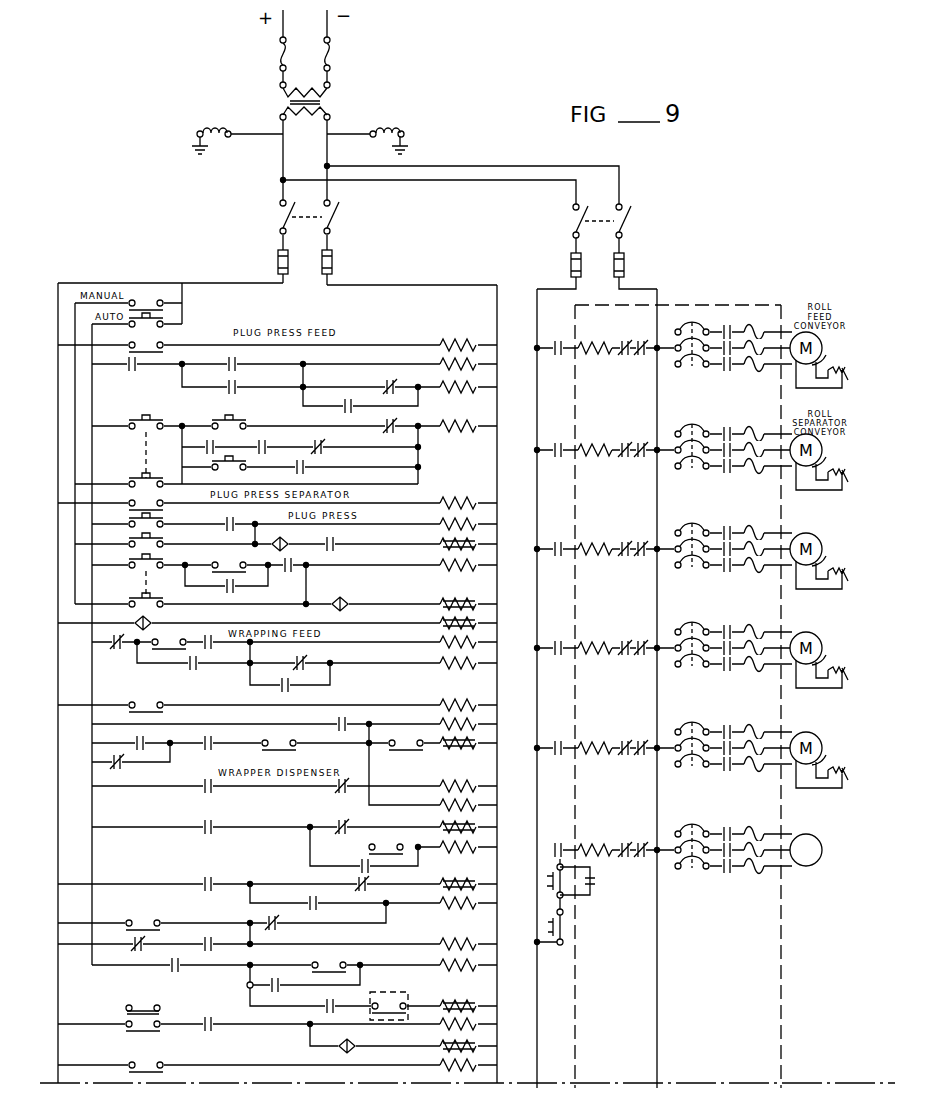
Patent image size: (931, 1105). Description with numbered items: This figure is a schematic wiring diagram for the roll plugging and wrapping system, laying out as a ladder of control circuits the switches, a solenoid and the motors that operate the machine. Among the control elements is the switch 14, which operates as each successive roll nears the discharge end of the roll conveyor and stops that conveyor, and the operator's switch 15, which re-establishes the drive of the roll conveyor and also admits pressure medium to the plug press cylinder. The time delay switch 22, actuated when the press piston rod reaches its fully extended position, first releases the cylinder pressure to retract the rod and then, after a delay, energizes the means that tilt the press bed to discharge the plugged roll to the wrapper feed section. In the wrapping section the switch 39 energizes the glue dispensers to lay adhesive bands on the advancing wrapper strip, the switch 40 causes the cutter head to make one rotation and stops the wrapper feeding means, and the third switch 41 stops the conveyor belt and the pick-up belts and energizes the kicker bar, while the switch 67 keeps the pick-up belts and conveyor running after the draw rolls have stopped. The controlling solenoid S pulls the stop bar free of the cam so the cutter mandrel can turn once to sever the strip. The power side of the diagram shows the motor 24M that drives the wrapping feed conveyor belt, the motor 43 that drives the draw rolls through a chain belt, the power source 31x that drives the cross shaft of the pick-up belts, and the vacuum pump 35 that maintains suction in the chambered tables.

The switch 14 is at (152, 352).
The switch 15 is at (148, 500).
The time delay switch 22 is at (232, 574).
The switch 40 is at (152, 697).
The switch 41 is at (288, 750).
The switch 39 is at (404, 750).
The controlling solenoid S is at (444, 825).
The switch 67 is at (445, 946).
The motor 24M is at (818, 538).
The motor 43 is at (820, 637).
The power source 31x is at (819, 738).
The vacuum pump 35 is at (819, 863).